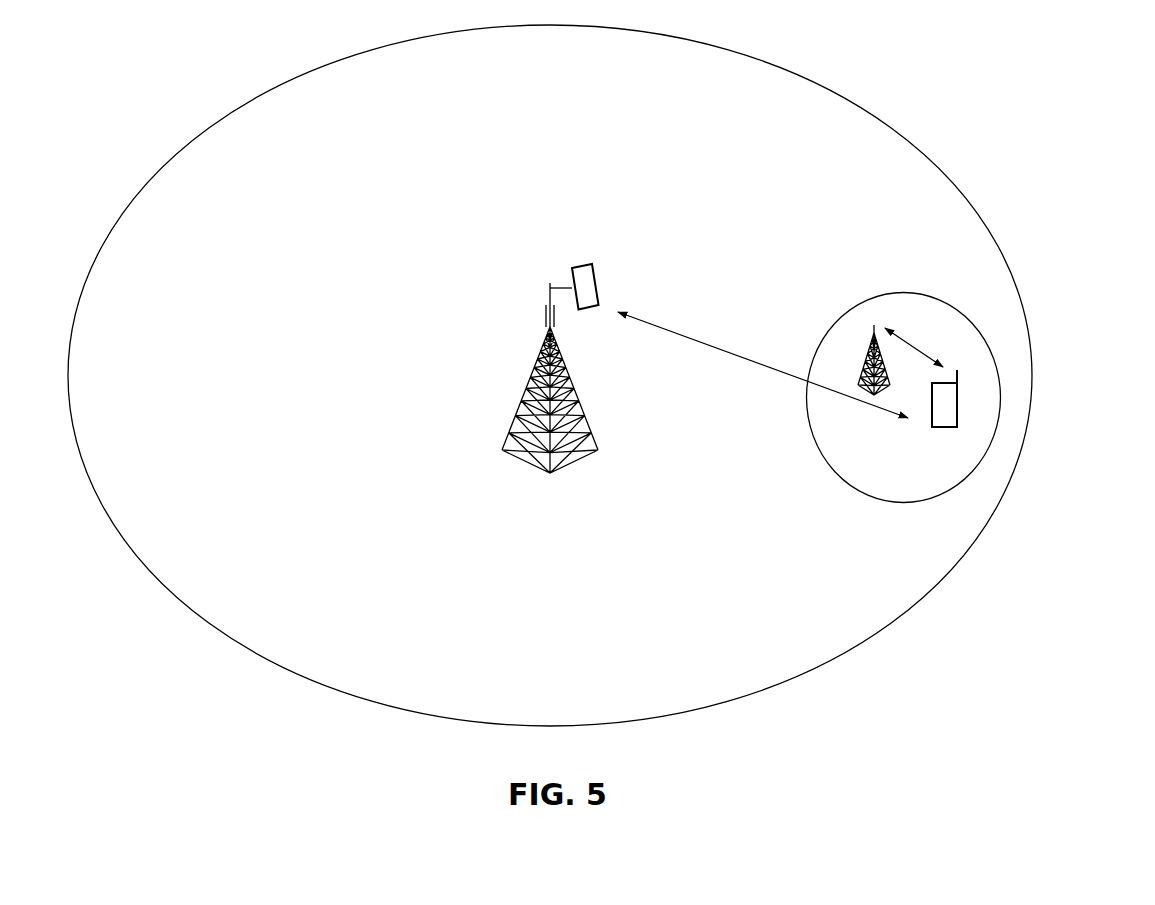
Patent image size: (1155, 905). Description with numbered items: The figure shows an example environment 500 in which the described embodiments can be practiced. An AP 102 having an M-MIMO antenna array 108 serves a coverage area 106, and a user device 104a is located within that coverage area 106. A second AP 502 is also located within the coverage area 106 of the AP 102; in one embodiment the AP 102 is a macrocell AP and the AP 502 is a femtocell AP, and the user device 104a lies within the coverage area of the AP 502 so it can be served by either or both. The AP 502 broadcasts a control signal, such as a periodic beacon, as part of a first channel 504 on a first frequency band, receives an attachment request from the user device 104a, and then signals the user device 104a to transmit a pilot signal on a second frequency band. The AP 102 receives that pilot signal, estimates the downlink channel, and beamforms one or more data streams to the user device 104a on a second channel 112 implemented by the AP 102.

The example environment 500 is at (1118, 53).
The coverage area 106 is at (178, 153).
The AP 102 is at (528, 378).
The M-MIMO antenna array 108 is at (591, 310).
The second channel 112 is at (753, 362).
The second AP 502 is at (865, 353).
The first channel 504 is at (918, 350).
The user device 104a is at (945, 428).